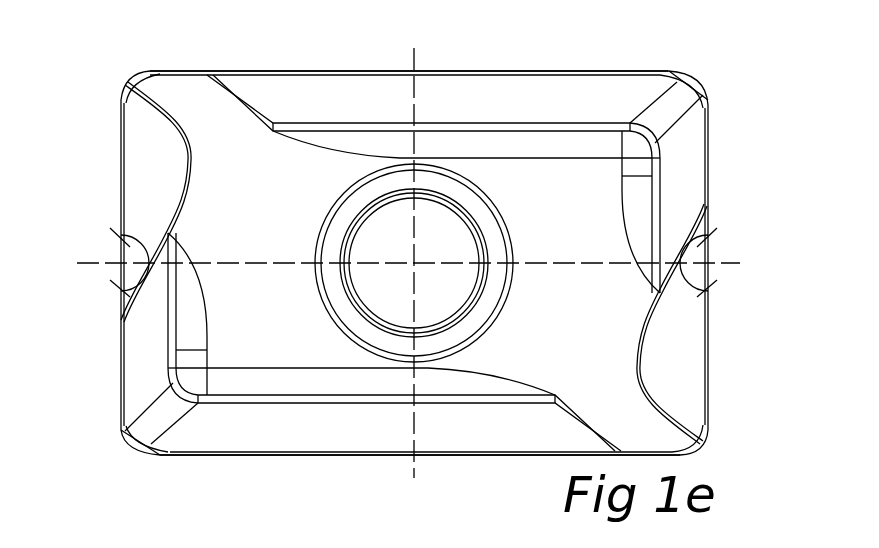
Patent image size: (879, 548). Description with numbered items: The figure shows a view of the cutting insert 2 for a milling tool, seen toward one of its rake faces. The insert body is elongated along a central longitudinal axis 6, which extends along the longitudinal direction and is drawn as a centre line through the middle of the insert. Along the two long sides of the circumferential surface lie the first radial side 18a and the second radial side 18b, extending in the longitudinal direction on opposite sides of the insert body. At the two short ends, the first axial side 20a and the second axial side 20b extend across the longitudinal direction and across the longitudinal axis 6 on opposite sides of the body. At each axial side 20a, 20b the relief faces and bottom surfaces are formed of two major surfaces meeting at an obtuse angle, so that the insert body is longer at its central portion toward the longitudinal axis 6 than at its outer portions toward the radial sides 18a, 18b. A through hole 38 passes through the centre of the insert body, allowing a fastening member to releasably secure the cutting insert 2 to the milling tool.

The cutting insert 2 is at (729, 66).
The central longitudinal axis 6 is at (100, 265).
The first radial side 18a is at (379, 480).
The second radial side 18b is at (293, 44).
The first axial side 20a is at (100, 181).
The second axial side 20b is at (741, 218).
The through hole 38 is at (385, 237).